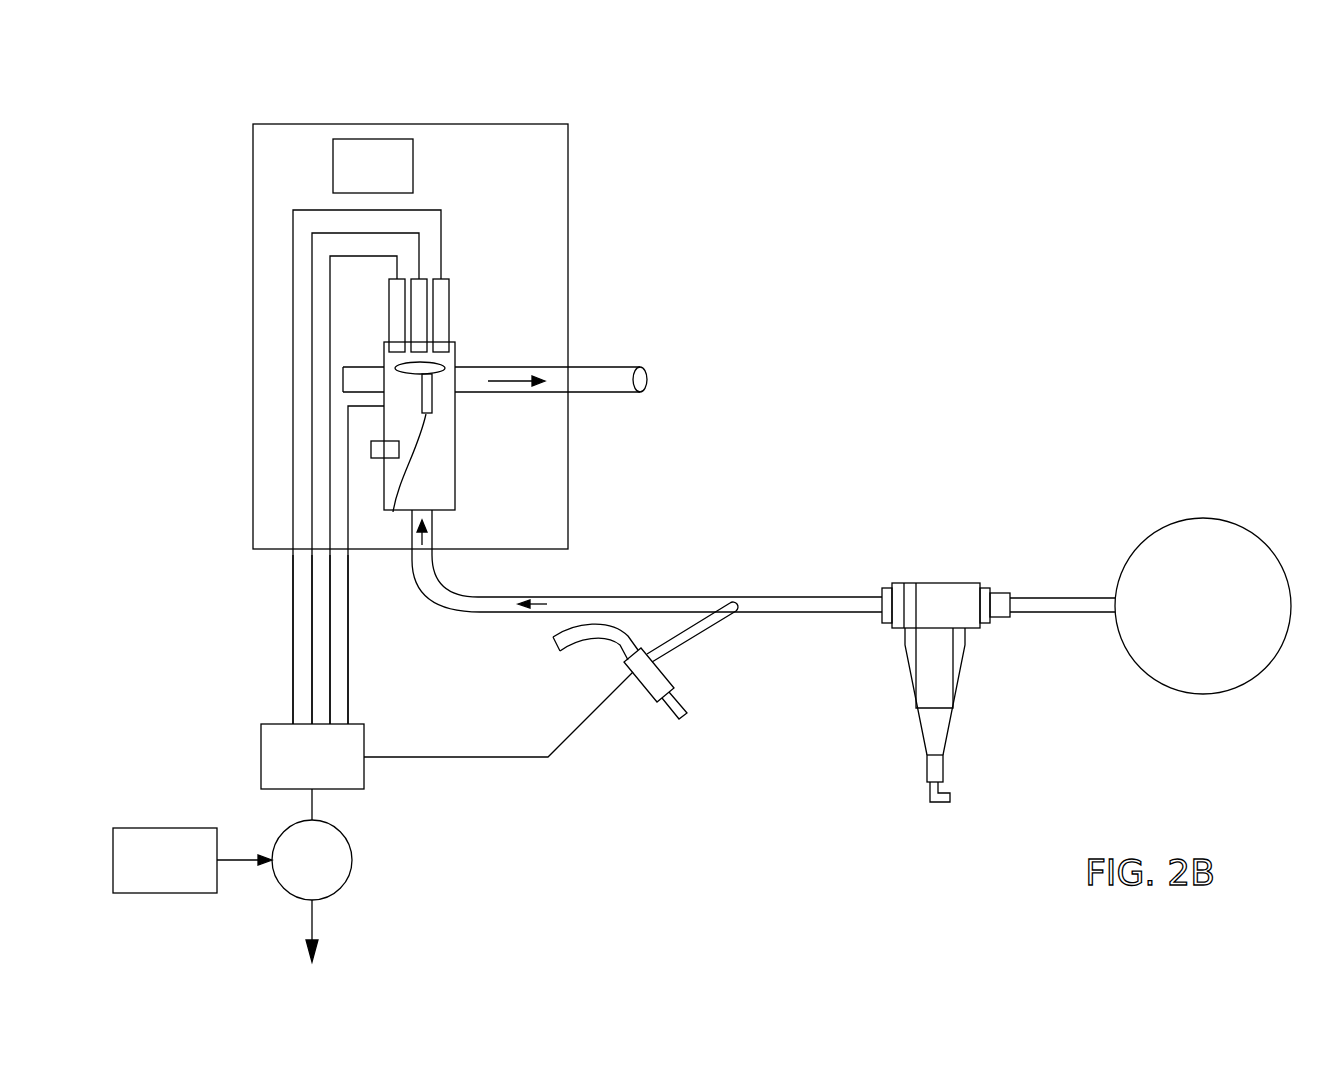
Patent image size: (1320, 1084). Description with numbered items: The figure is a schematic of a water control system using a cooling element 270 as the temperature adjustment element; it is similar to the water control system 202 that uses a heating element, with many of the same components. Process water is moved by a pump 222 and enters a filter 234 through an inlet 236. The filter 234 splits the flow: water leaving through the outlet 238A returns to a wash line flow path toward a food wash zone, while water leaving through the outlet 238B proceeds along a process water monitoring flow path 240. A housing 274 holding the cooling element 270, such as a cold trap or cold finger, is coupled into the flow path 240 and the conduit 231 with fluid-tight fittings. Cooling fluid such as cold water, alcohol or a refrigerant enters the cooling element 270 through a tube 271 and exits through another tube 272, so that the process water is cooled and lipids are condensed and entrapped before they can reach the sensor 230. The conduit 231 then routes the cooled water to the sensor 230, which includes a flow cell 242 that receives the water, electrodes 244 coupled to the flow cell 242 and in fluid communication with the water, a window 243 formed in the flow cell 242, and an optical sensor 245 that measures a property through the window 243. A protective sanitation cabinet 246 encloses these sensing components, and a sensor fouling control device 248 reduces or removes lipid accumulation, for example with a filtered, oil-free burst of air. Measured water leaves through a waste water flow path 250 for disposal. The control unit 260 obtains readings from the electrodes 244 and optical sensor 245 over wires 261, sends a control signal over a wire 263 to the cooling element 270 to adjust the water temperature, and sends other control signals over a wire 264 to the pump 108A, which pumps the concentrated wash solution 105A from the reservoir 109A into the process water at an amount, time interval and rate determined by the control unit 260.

The water control system 202 is at (913, 110).
The sensor 230 is at (456, 103).
The protective sanitation cabinet 246 is at (568, 150).
The sensor fouling control device 248 is at (353, 178).
The electrodes 244 is at (492, 225).
The flow cell 242 is at (455, 472).
The window 243 is at (445, 362).
The optical sensor 245 is at (393, 512).
The waste water flow path 250 is at (607, 393).
The conduit 231 is at (478, 608).
The housing 274 is at (770, 615).
The tube 271 is at (582, 643).
The cooling element 270 is at (676, 690).
The tube 272 is at (680, 722).
The wires 261 is at (268, 583).
The control unit 260 is at (293, 768).
The wire 263 is at (447, 757).
The wire 264 is at (316, 805).
The pump 108A is at (286, 875).
The reservoir 109A is at (139, 875).
The concentrated wash solution 105A is at (316, 920).
The outlet 238B is at (887, 583).
The filter 234 is at (940, 583).
The inlet 236 is at (1010, 593).
The pump 222 is at (1206, 517).
The process water monitoring flow path 240 is at (865, 615).
The outlet 238A is at (950, 790).